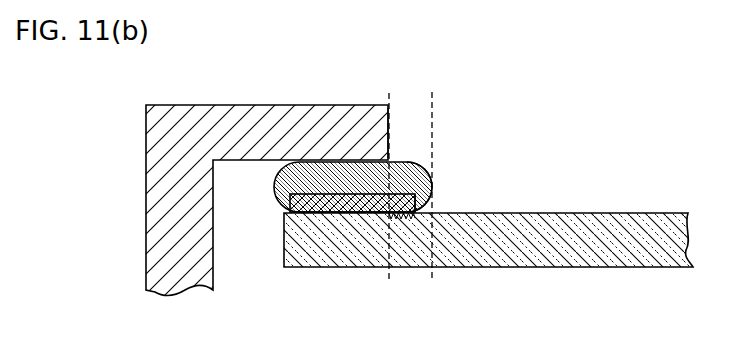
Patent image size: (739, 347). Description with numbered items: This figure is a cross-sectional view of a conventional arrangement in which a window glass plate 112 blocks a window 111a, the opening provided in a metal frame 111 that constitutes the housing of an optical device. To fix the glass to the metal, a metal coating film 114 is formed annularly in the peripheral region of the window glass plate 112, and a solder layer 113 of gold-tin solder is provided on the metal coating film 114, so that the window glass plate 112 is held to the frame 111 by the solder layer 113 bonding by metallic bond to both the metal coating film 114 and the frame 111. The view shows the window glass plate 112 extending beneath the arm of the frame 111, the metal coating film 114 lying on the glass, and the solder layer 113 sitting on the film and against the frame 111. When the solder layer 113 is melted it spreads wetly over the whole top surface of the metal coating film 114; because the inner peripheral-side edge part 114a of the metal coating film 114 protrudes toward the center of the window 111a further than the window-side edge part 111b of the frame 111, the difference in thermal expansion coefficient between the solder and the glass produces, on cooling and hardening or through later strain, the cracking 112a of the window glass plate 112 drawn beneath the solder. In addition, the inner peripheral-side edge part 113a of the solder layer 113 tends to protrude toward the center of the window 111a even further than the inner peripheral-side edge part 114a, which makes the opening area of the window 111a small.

The frame 111 is at (177, 96).
The window 111a is at (389, 122).
The window-side edge part of the frame 111b is at (389, 152).
The window glass plate 112 is at (613, 276).
The cracking 112a is at (408, 218).
The solder layer 113 is at (355, 173).
The inner peripheral-side edge part of the solder layer 113a is at (432, 180).
The metal coating film 114 is at (352, 203).
The inner peripheral-side edge part of the metal coating film 114a is at (417, 213).